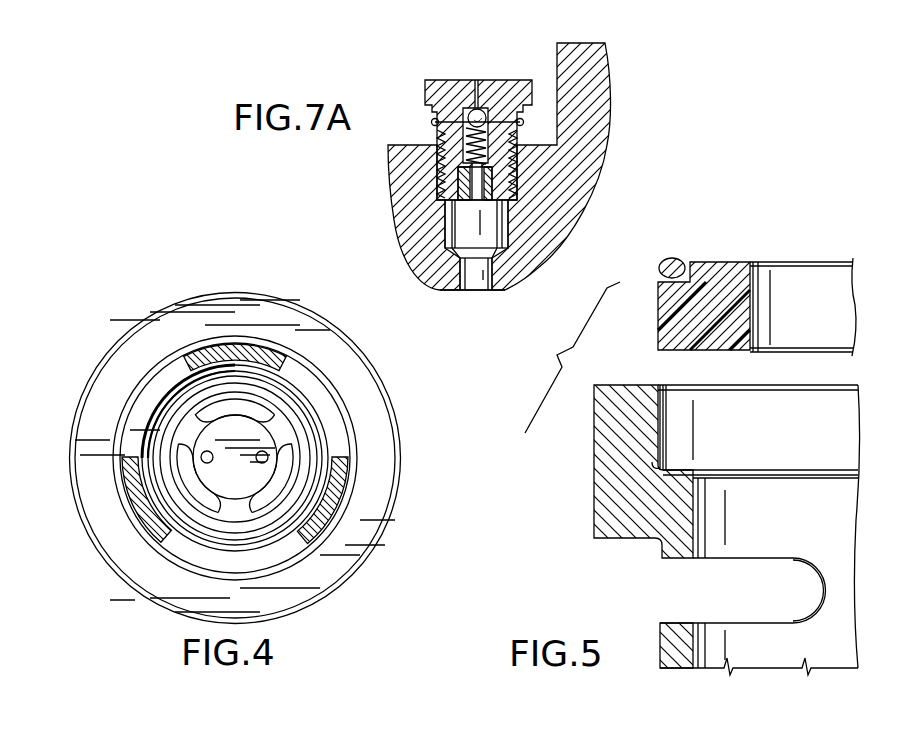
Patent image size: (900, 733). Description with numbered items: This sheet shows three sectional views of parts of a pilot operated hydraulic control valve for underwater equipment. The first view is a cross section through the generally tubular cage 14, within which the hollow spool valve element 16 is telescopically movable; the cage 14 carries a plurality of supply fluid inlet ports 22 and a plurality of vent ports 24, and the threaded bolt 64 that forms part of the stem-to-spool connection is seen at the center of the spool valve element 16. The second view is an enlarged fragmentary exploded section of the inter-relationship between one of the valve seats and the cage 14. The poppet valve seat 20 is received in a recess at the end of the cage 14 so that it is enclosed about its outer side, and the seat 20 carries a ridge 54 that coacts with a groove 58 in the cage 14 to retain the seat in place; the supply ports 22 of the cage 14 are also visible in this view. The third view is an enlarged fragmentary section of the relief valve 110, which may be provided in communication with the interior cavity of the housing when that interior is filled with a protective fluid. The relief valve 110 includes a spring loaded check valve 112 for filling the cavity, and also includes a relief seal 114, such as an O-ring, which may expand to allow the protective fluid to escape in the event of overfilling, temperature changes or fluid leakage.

In FIG. 4, the cage 14 is at (378, 400).
In FIG. 5, the cage 14 is at (612, 510).
In FIG. 4, the spool valve element 16 is at (289, 386).
In FIG. 4, the vent ports 24 is at (348, 454).
In FIG. 4, the threaded bolt 64 is at (208, 478).
In FIG. 5, the valve seat 20 is at (729, 270).
In FIG. 5, the ridge 54 is at (658, 350).
In FIG. 5, the groove 58 is at (650, 466).
In FIG. 5, the supply fluid inlet ports 22 is at (718, 560).
In FIG. 7A, the relief valve 110 is at (441, 82).
In FIG. 7A, the spring loaded check valve 112 is at (481, 110).
In FIG. 7A, the relief seal 114 is at (432, 121).